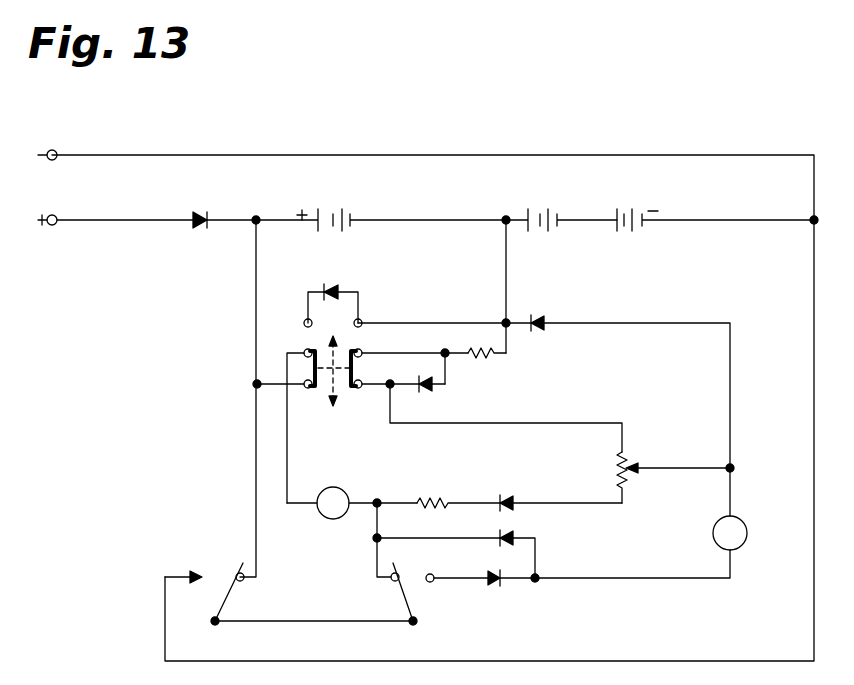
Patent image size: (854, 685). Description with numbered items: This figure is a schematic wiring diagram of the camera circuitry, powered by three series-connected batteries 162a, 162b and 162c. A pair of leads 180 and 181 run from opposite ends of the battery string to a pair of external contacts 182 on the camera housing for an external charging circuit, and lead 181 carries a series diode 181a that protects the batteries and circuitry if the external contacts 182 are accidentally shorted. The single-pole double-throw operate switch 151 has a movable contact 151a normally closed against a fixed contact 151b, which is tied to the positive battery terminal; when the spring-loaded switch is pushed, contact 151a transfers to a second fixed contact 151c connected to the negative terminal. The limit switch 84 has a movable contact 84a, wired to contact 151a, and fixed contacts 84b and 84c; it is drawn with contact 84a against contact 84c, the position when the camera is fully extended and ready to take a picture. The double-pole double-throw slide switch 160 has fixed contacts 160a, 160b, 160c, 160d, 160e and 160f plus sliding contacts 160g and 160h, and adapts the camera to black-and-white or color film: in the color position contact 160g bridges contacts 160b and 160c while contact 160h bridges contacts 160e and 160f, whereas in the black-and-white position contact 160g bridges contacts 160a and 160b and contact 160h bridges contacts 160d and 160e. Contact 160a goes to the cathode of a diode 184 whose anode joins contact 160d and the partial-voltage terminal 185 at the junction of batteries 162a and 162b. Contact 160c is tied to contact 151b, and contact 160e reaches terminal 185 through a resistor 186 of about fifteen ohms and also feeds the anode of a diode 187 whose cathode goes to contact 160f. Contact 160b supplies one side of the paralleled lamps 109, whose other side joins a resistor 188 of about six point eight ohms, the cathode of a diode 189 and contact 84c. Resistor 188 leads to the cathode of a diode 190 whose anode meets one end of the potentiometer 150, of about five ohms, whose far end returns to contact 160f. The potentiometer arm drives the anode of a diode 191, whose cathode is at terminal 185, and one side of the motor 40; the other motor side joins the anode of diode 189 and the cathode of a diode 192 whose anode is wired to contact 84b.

The lead 180 is at (205, 155).
The external contacts 182 is at (55, 160).
The lead 181 is at (118, 220).
The diode 181a is at (210, 216).
The battery 162a is at (322, 215).
The battery 162b is at (540, 215).
The battery 162c is at (638, 215).
The partial-voltage terminal 185 is at (505, 217).
The diode 184 is at (326, 289).
The slide switch 160 is at (366, 294).
The fixed contact 160a is at (305, 320).
The fixed contact 160b is at (305, 350).
The fixed contact 160c is at (308, 388).
The fixed contact 160d is at (362, 320).
The fixed contact 160e is at (362, 350).
The fixed contact 160f is at (358, 388).
The sliding contact 160g is at (312, 366).
The sliding contact 160h is at (356, 368).
The resistor 186 is at (485, 356).
The diode 187 is at (424, 392).
The diode 191 is at (540, 312).
The potentiometer 150 is at (625, 458).
The lamps 109 is at (335, 487).
The resistor 188 is at (425, 500).
The diode 190 is at (507, 500).
The diode 189 is at (507, 536).
The diode 192 is at (500, 574).
The motor 40 is at (713, 533).
The operate switch 151 is at (210, 572).
The movable contact 151a is at (218, 600).
The fixed contact 151b is at (243, 580).
The fixed contact 151c is at (195, 586).
The limit switch 84 is at (385, 595).
The movable contact 84a is at (418, 605).
The fixed contact 84b is at (432, 581).
The fixed contact 84c is at (397, 600).